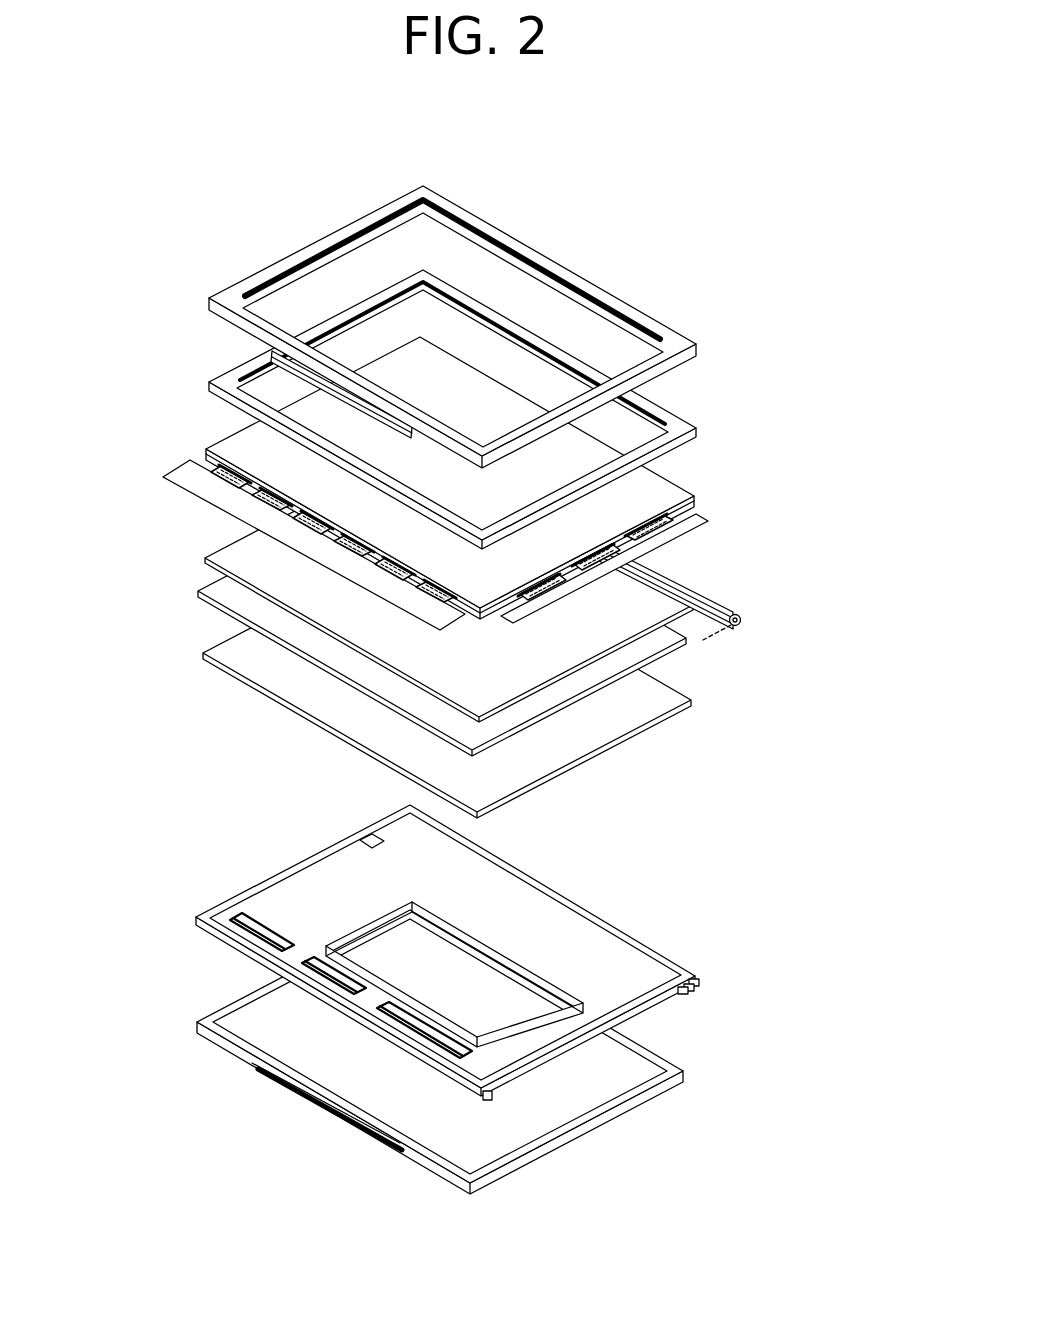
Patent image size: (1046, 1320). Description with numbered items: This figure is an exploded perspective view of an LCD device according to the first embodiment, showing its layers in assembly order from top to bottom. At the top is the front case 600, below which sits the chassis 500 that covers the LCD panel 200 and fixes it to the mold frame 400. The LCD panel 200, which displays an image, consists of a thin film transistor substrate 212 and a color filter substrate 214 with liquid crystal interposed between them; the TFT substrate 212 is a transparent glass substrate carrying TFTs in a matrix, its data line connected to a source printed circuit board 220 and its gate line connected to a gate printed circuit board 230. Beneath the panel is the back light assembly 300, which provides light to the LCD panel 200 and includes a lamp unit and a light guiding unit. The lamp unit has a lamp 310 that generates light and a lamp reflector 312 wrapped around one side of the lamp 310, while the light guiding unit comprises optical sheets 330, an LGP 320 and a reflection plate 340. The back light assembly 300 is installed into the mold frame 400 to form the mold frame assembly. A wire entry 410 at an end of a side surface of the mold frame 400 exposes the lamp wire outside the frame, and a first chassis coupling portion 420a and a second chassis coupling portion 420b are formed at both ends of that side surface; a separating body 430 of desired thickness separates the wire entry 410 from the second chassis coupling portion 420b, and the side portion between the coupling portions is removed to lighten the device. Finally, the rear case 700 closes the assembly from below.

The front case 600 is at (672, 318).
The chassis 500 is at (248, 360).
The LCD panel 200 is at (225, 418).
The source printed circuit board 220 is at (180, 490).
The optical sheets 330 is at (213, 562).
The back light assembly 300 is at (433, 641).
The color filter substrate 214 is at (665, 486).
The thin film transistor substrate 212 is at (696, 512).
The gate printed circuit board 230 is at (668, 547).
The lamp reflector 312 is at (744, 616).
The lamp 310 is at (738, 620).
The LGP 320 is at (555, 705).
The reflection plate 340 is at (555, 765).
The mold frame 400 is at (472, 1017).
The wire entry 410 is at (693, 985).
The separating body 430 is at (687, 988).
The second chassis coupling portion 420b is at (682, 990).
The rear case 700 is at (683, 1068).
The first chassis coupling portion 420a is at (490, 1097).